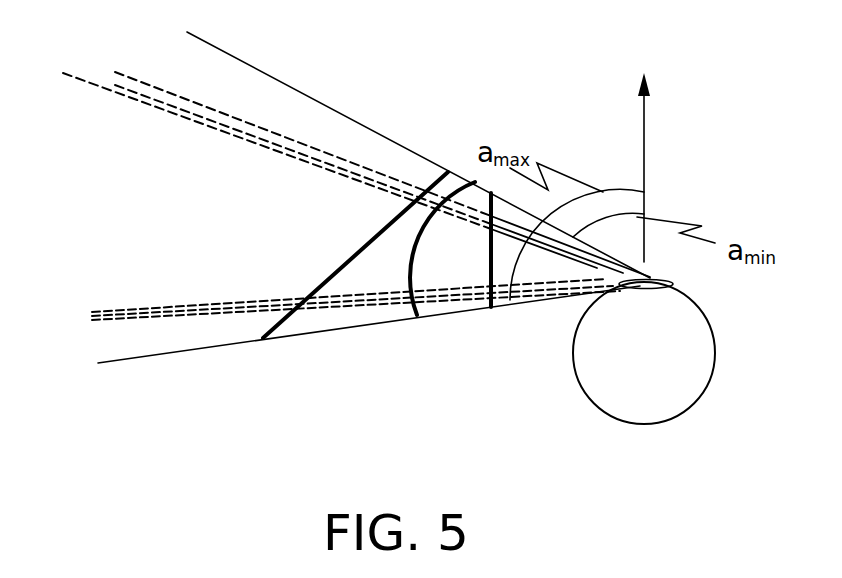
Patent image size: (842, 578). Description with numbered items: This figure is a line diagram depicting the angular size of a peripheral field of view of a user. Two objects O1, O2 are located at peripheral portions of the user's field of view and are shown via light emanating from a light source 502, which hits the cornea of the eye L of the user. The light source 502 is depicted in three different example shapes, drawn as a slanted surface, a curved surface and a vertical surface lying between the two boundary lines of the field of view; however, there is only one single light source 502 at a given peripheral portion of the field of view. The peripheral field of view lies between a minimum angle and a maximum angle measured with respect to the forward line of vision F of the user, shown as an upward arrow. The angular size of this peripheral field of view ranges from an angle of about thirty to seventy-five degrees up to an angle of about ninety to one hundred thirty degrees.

The light source 502 is at (470, 322).
The object O1 is at (40, 61).
The object O2 is at (43, 324).
The forward line of vision F is at (658, 167).
The eye L is at (632, 369).